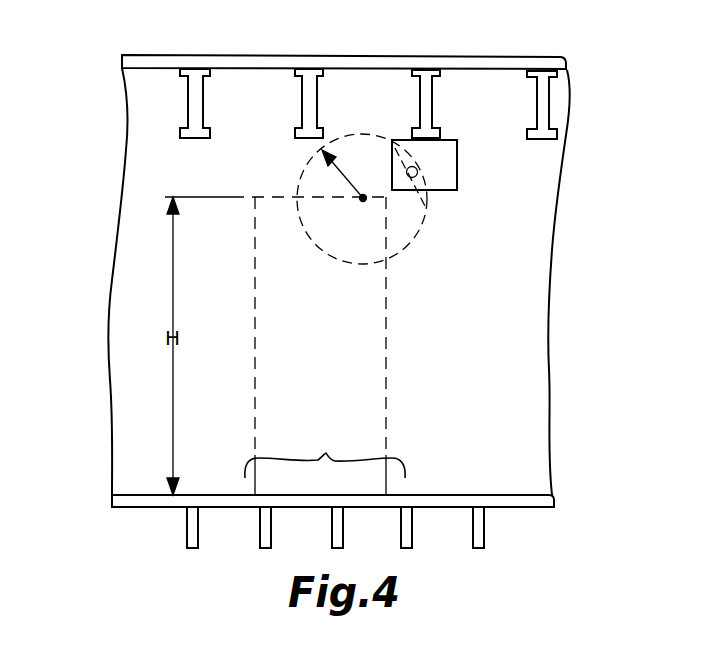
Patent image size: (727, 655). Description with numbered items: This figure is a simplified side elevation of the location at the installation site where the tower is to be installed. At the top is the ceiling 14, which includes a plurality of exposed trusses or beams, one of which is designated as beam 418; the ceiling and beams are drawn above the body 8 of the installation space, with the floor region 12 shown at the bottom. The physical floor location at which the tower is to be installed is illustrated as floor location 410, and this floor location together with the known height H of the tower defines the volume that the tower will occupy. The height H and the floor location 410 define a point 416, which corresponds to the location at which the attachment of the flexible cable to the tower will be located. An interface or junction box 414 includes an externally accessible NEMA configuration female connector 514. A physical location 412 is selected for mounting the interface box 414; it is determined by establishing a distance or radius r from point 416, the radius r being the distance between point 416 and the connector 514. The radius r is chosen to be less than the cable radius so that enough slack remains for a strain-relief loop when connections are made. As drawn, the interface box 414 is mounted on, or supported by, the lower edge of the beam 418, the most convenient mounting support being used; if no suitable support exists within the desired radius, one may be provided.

The substrate body 8 is at (552, 205).
The ceiling 14 is at (308, 81).
The lower surface layer with pins 12 is at (90, 488).
The physical location 412 is at (434, 79).
The beam 418 is at (420, 108).
The interface box 414 is at (450, 180).
The NEMA configuration female connector 514 is at (417, 170).
The point 416 is at (363, 198).
The floor location 410 is at (325, 346).